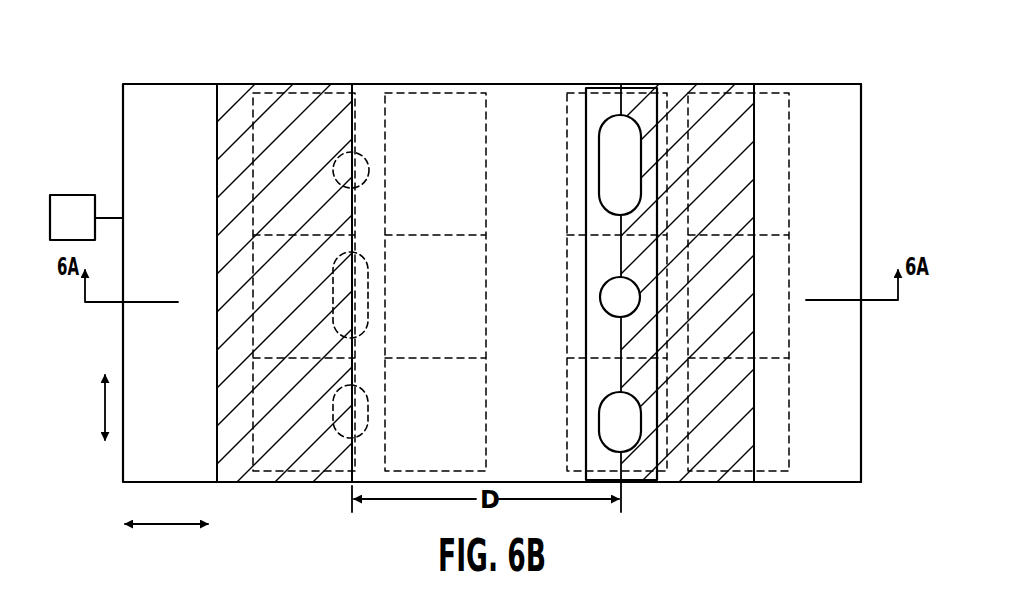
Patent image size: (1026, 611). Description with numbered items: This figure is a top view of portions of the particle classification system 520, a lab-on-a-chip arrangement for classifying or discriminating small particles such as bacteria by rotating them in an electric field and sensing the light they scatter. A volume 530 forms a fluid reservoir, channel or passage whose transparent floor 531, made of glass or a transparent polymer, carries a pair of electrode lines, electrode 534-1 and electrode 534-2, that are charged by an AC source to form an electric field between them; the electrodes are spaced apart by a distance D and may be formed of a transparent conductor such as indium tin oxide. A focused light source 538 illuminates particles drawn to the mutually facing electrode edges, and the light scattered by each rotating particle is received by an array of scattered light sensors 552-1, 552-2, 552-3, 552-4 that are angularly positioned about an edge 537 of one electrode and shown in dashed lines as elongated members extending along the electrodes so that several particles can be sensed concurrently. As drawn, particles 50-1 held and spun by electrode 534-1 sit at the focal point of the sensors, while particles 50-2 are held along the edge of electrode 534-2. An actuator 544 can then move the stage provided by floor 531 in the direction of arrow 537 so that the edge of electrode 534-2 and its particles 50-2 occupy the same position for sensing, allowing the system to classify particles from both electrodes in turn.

The particle classification system 520 is at (74, 111).
The volume 530 is at (370, 125).
The transparent floor 531 is at (863, 248).
The electrode edge / arrow 537 is at (622, 108).
The focused light source 538 is at (659, 451).
The actuator 544 is at (50, 218).
The first electrode 534-1 is at (697, 482).
The second electrode 534-2 is at (275, 484).
The first scattered light sensor 552-1 is at (290, 95).
The second scattered light sensor 552-2 is at (487, 125).
The third scattered light sensor 552-3 is at (563, 337).
The fourth scattered light sensor 552-4 is at (790, 148).
The first particles 50-1 is at (598, 165).
The second particles 50-2 is at (368, 178).